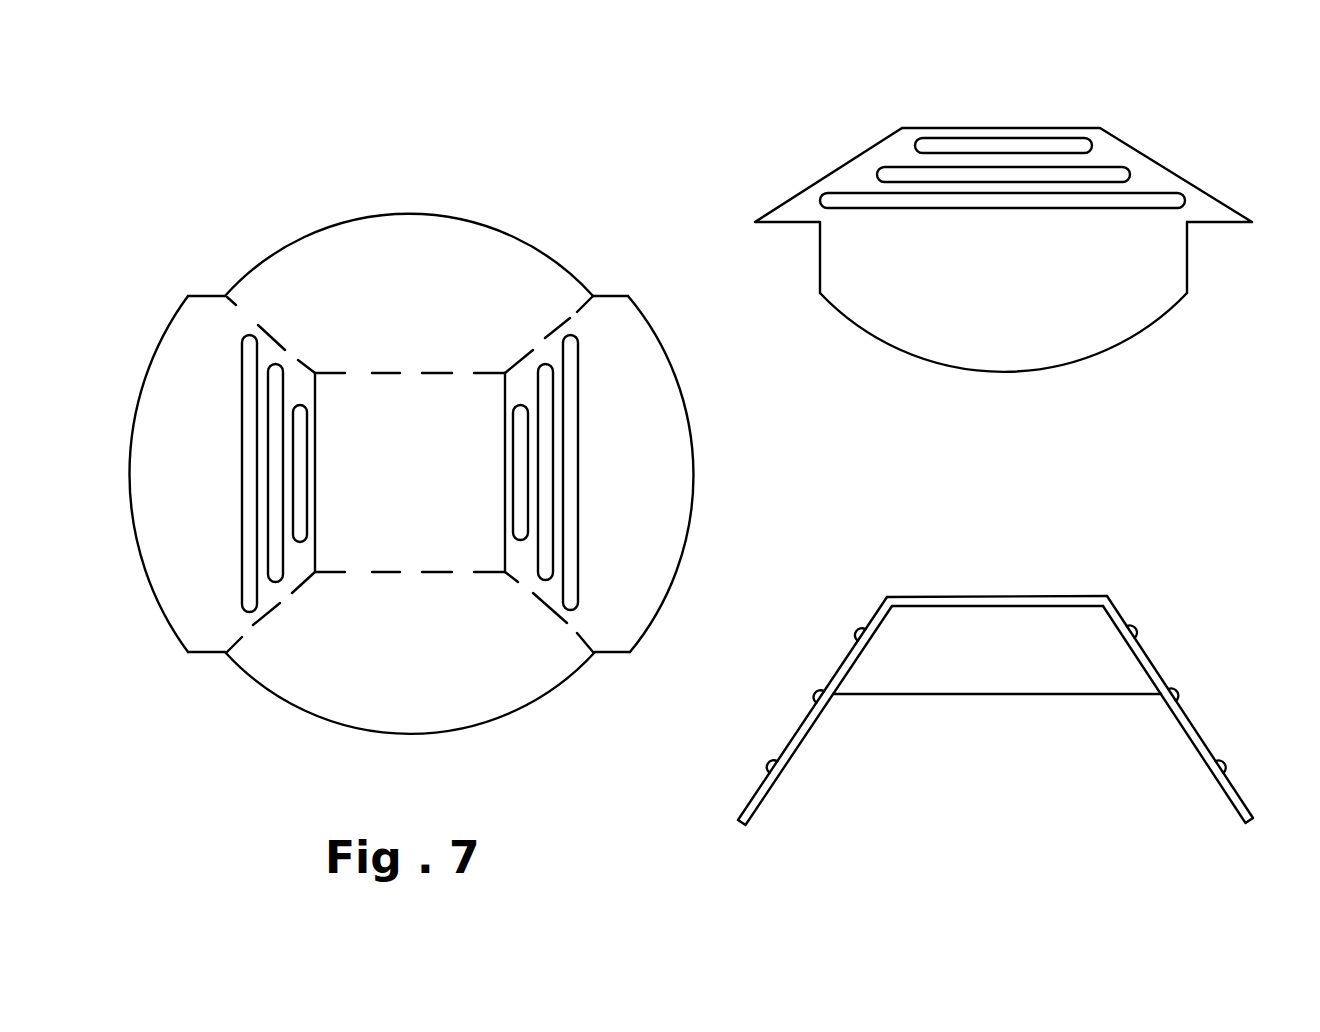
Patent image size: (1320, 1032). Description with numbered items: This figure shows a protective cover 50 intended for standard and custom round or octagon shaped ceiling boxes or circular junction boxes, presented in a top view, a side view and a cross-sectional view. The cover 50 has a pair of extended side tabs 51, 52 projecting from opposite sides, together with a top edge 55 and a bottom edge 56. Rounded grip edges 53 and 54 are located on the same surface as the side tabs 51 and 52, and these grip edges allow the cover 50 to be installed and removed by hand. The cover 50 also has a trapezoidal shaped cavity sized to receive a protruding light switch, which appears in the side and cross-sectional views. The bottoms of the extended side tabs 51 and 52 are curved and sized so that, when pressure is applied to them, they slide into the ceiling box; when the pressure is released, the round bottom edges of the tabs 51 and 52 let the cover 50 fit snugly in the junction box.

The protective cover 50 is at (537, 237).
The extended side tab 51 is at (150, 348).
The extended side tab 52 is at (677, 375).
The rounded grip edge 53 is at (248, 465).
The rounded grip edge 54 is at (573, 527).
The top edge 55 is at (355, 213).
The bottom edge 56 is at (338, 721).